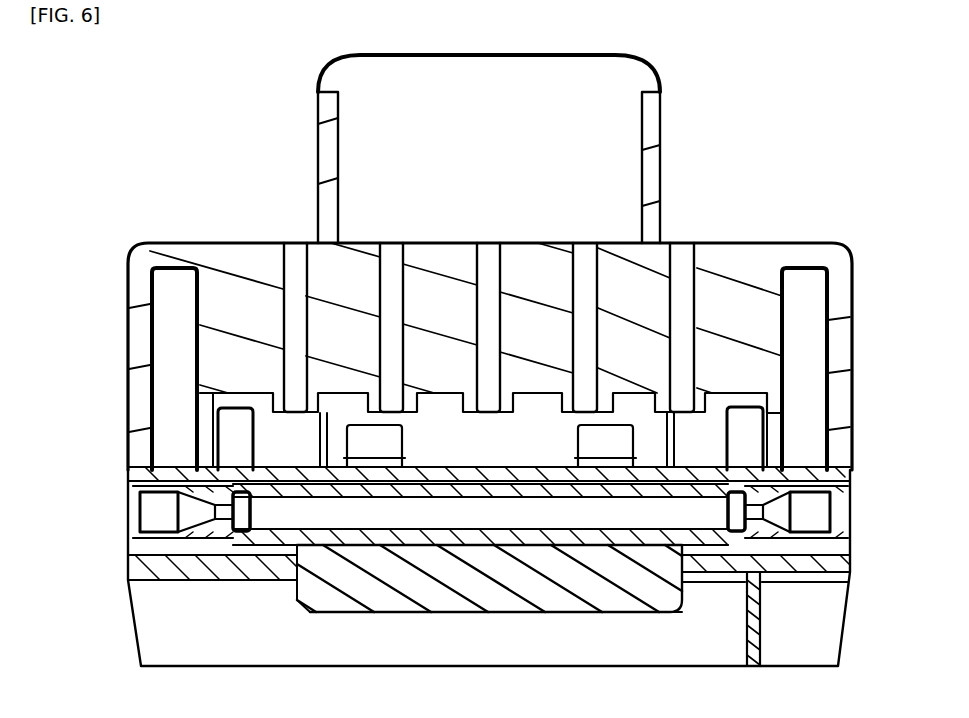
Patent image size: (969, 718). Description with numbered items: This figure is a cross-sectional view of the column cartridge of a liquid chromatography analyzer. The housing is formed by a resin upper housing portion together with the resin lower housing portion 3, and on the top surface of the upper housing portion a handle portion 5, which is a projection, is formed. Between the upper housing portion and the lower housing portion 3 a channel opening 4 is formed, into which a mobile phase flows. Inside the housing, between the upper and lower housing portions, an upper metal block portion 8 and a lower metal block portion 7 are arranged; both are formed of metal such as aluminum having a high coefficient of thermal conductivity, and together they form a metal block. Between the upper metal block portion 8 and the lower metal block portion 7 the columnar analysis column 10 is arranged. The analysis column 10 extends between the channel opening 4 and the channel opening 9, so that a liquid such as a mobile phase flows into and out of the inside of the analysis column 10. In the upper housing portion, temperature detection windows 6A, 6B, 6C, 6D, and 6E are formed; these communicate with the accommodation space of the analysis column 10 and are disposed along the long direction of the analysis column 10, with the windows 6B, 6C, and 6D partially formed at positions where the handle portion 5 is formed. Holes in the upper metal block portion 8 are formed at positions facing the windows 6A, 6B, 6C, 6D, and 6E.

The lower housing portion 3 is at (457, 638).
The channel opening 4 is at (124, 515).
The handle portion 5 is at (665, 118).
The temperature detection window 6A is at (291, 241).
The temperature detection window 6B is at (399, 241).
The temperature detection window 6C is at (482, 241).
The temperature detection window 6D is at (577, 241).
The temperature detection window 6E is at (687, 241).
The lower metal block portion 7 is at (563, 600).
The upper metal block portion 8 is at (504, 478).
The channel opening 9 is at (843, 517).
The analysis column 10 is at (677, 600).